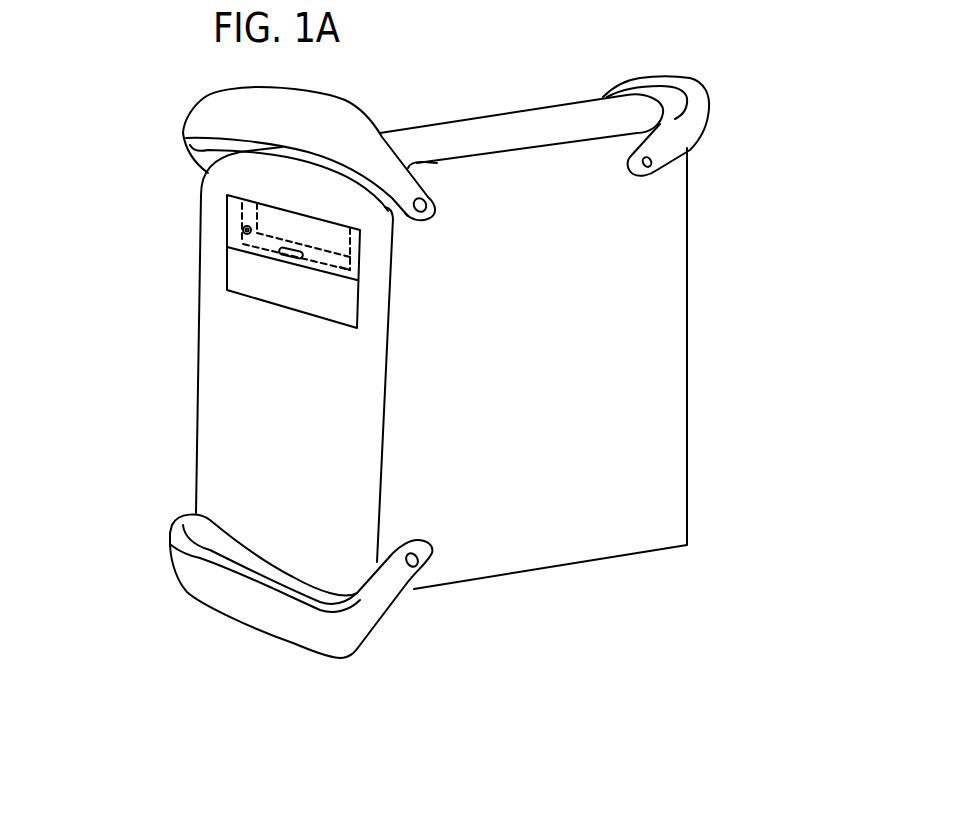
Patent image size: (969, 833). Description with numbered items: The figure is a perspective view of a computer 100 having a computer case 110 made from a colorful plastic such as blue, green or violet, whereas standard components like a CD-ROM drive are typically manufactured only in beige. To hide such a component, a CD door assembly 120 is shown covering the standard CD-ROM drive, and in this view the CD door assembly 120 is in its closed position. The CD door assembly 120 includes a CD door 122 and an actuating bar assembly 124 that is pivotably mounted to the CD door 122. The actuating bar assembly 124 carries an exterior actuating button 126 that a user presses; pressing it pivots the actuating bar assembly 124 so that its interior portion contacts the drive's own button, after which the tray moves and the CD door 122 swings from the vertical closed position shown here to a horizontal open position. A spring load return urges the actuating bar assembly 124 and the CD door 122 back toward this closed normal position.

The computer 100 is at (465, 368).
The computer case 110 is at (677, 505).
The CD door assembly 120 is at (245, 230).
The CD door 122 is at (290, 228).
The actuating bar assembly 124 is at (337, 265).
The actuating button 126 is at (283, 260).